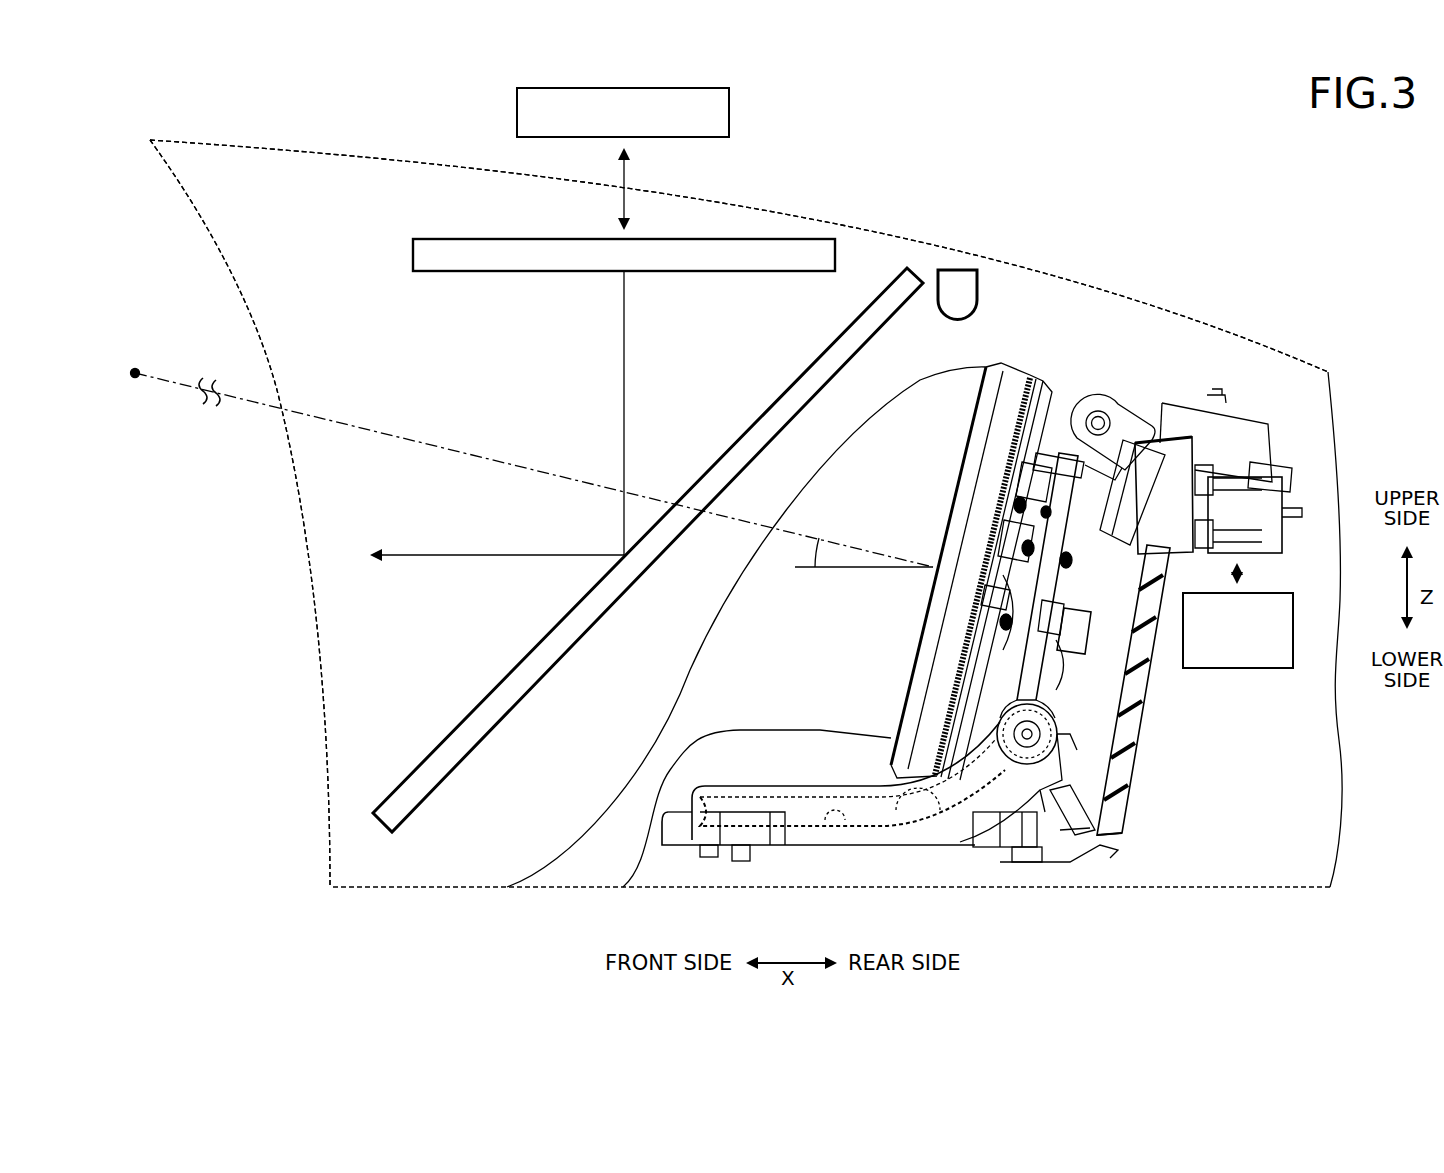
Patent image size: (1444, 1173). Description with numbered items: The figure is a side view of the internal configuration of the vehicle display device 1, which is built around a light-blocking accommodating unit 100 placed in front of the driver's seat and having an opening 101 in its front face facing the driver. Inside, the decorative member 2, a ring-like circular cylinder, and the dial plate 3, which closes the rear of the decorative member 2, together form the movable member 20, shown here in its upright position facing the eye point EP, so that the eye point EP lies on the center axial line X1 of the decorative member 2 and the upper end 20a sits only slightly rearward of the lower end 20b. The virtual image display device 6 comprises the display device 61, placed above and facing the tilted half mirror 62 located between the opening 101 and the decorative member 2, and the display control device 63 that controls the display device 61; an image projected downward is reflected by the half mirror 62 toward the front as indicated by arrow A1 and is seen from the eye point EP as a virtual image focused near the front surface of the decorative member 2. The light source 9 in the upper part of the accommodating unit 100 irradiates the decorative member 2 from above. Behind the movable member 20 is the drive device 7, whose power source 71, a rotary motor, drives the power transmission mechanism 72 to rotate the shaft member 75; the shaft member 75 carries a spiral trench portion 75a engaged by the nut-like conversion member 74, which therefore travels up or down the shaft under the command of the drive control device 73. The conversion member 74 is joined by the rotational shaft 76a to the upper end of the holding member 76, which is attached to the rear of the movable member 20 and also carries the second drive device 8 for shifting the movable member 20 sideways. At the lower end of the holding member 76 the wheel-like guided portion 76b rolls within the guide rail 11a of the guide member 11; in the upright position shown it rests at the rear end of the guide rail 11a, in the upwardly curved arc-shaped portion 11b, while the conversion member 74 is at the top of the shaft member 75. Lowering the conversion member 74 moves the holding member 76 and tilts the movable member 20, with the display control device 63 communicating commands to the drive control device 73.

The vehicle display device 1 is at (190, 128).
The accommodating unit 100 is at (283, 146).
The opening 101 is at (290, 490).
The eye point EP is at (135, 369).
The center axial line X1 is at (534, 470).
The arrow A1 is at (486, 553).
The virtual image display device 6 is at (875, 155).
The display device 61 is at (790, 239).
The half mirror 62 is at (878, 287).
The display control device 63 is at (730, 118).
The light source 9 is at (957, 270).
The movable member 20 is at (1043, 163).
The decorative member 2 is at (1018, 370).
The dial plate 3 is at (1040, 378).
The upper end 20a is at (507, 887).
The lower end 20b is at (623, 887).
The holding member 76 is at (1076, 584).
The rotational shaft 76a is at (1108, 400).
The guided portion 76b is at (1027, 764).
The drive device 7 is at (1325, 273).
The power source 71 is at (1312, 527).
The power transmission mechanism 72 is at (1185, 404).
The drive control device 73 is at (1293, 630).
The conversion member 74 is at (1173, 436).
The shaft member 75 is at (1170, 660).
The trench portion 75a is at (1138, 712).
The second drive device 8 is at (1091, 632).
The guide member 11 is at (890, 825).
The guide rail 11a is at (835, 818).
The arc-shaped portion 11b is at (905, 812).